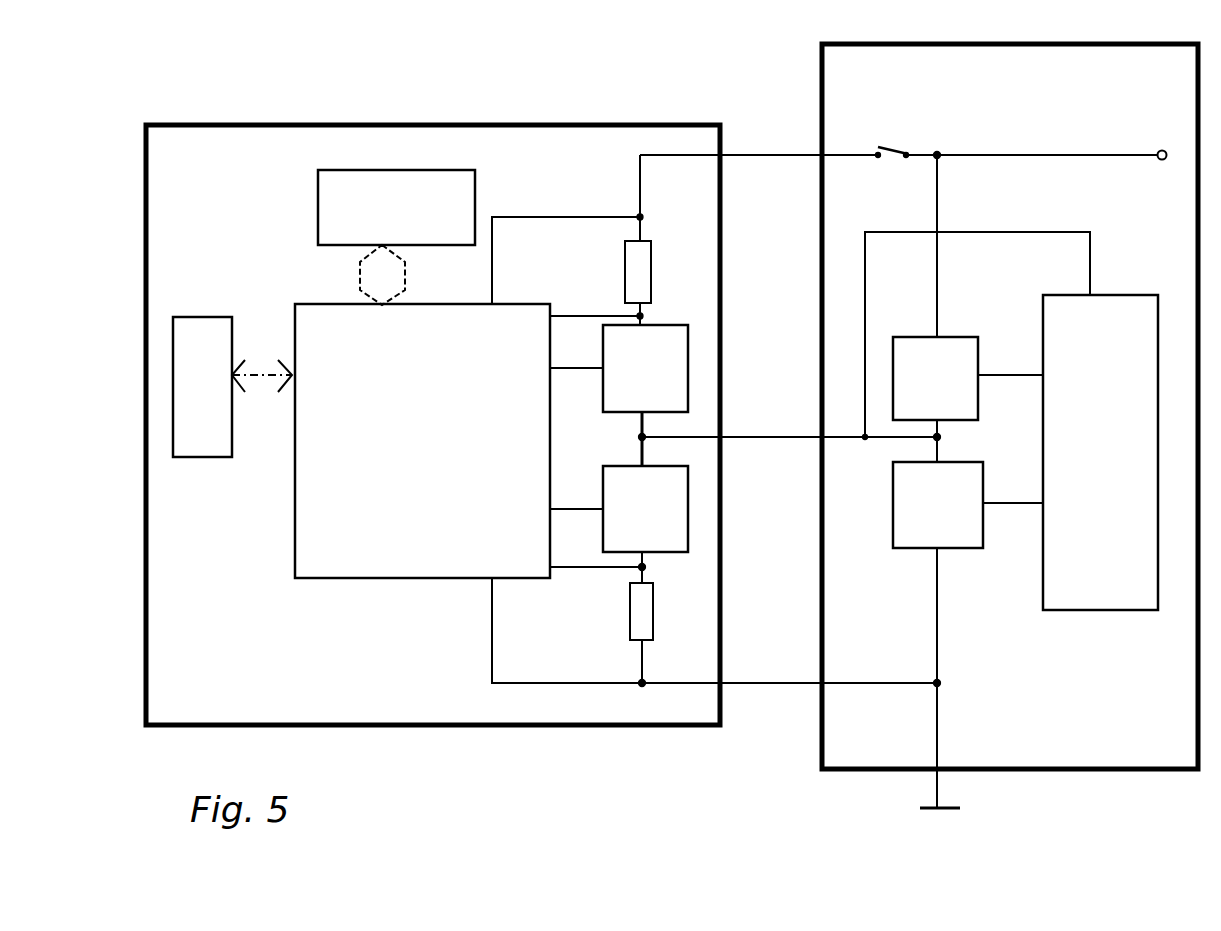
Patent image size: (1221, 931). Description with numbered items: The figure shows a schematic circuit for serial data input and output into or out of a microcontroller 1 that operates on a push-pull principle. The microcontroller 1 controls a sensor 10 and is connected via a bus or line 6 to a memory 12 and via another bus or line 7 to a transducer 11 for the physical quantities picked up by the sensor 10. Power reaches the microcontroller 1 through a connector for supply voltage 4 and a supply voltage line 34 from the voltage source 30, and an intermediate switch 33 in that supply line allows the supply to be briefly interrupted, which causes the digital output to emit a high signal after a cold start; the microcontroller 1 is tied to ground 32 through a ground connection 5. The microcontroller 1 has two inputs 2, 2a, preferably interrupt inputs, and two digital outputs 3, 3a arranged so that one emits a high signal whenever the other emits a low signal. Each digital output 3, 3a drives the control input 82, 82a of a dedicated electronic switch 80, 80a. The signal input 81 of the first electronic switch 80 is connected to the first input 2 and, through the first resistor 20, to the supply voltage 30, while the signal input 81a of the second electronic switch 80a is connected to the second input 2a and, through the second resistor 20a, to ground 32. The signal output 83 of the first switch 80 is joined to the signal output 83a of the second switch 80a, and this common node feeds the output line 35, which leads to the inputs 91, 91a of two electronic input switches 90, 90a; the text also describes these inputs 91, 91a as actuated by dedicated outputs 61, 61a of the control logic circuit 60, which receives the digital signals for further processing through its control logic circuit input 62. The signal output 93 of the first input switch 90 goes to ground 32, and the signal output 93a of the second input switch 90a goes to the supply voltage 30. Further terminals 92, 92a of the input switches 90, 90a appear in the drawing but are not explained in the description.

The sensor 10 is at (240, 208).
The memory 12 is at (198, 343).
The bus or line 6 is at (268, 395).
The transducer 11 is at (470, 190).
The bus or line 7 is at (365, 285).
The microcontroller 1 is at (390, 474).
The connector for supply voltage 4 is at (561, 281).
The first input 2 is at (581, 330).
The first digital output 3 is at (563, 377).
The second digital output 3a is at (557, 512).
The ground connection 5 is at (563, 618).
The second input 2a is at (581, 567).
The first resistor 20 is at (640, 268).
The first electronic switch 80 is at (670, 360).
The signal input of first electronic switch 81 is at (631, 344).
The control input of first electronic switch 82 is at (619, 373).
The signal output of first electronic switch 83 is at (644, 398).
The second electronic switch 80a is at (678, 520).
The signal input of second electronic switch 81a is at (640, 537).
The control input of second electronic switch 82a is at (628, 510).
The signal output of second electronic switch 83a is at (632, 484).
The second resistor 20a is at (630, 608).
The output line 35 is at (758, 440).
The intermediate switch 33 is at (895, 140).
The supply voltage line 34 is at (848, 160).
The voltage source 30 is at (1160, 143).
The ground 32 is at (957, 818).
The second electronic input switch 90a is at (968, 348).
The input of second input switch 91a is at (923, 407).
The current sensing unit terminal 92a is at (938, 379).
The signal output of second input switch 93a is at (928, 353).
The first electronic input switch 90 is at (960, 548).
The input of first input switch 91 is at (929, 480).
The current sensing unit terminal 92 is at (954, 506).
The signal output of first input switch 93 is at (929, 538).
The control logic circuit 60 is at (1138, 596).
The first output of control logic circuit 61 is at (1033, 510).
The second output of control logic circuit 61a is at (1037, 380).
The control logic circuit input 62 is at (1084, 279).